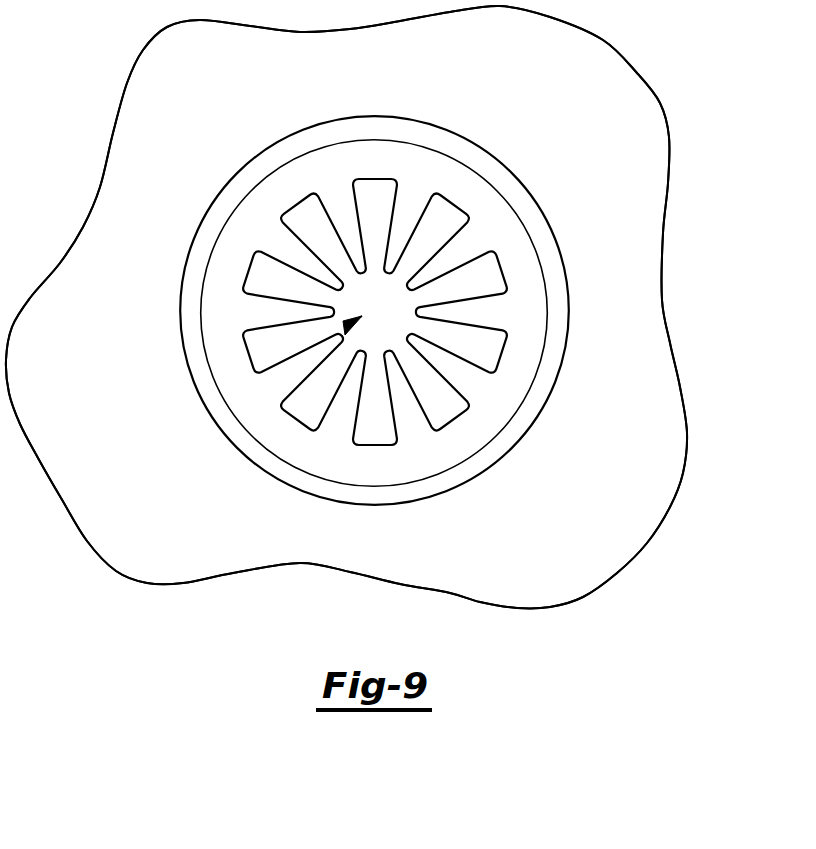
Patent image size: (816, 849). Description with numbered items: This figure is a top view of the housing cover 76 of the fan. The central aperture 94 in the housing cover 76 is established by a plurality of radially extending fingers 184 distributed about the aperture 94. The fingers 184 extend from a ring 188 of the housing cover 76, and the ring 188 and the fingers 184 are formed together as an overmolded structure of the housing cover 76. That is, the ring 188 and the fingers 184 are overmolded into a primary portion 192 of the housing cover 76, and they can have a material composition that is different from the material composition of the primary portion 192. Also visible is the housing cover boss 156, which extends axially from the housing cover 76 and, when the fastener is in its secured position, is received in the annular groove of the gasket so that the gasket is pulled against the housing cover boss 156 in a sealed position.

The housing cover 76 is at (157, 547).
The primary portion 192 is at (637, 380).
The housing cover boss 156 is at (527, 433).
The ring 188 is at (377, 467).
The fingers 184 is at (477, 268).
The aperture 94 is at (348, 324).